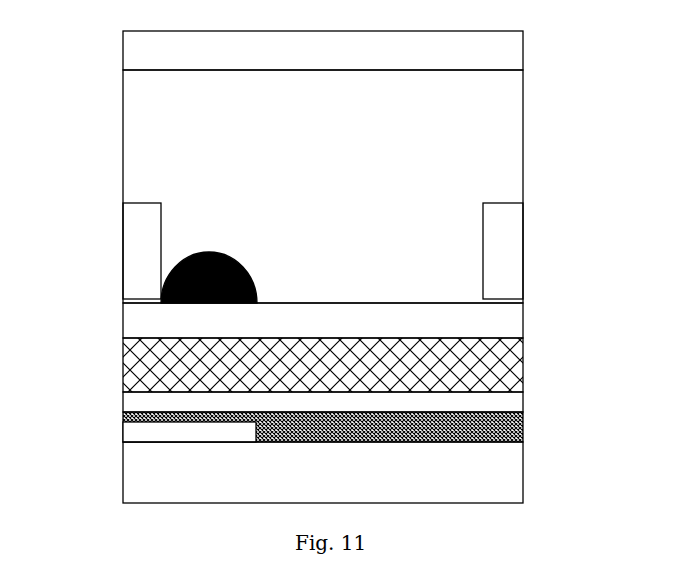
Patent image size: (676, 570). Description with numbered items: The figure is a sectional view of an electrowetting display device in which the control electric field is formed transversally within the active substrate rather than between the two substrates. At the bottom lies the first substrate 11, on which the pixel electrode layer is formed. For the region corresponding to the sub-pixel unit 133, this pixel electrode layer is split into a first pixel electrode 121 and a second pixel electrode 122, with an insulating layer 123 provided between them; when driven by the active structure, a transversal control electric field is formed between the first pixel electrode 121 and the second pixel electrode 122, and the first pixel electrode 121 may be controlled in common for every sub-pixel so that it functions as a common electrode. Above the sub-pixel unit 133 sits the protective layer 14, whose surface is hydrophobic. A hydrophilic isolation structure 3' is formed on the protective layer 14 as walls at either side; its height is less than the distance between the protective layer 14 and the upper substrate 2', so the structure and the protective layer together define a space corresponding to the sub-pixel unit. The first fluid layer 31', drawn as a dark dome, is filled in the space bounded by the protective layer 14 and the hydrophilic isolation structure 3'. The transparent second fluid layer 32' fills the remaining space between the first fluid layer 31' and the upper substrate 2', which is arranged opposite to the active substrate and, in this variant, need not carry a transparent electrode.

The upper substrate 2' is at (361, 50).
The transparent second fluid layer 32' is at (279, 186).
The hydrophilic isolation structure 3' is at (365, 251).
The first fluid layer 31' is at (146, 277).
The protective layer 14 is at (523, 325).
The sub-pixel unit 133 is at (143, 374).
The first pixel electrode 121 is at (503, 403).
The second pixel electrode 122 is at (157, 431).
The insulating layer 123 is at (523, 430).
The first substrate 11 is at (502, 487).